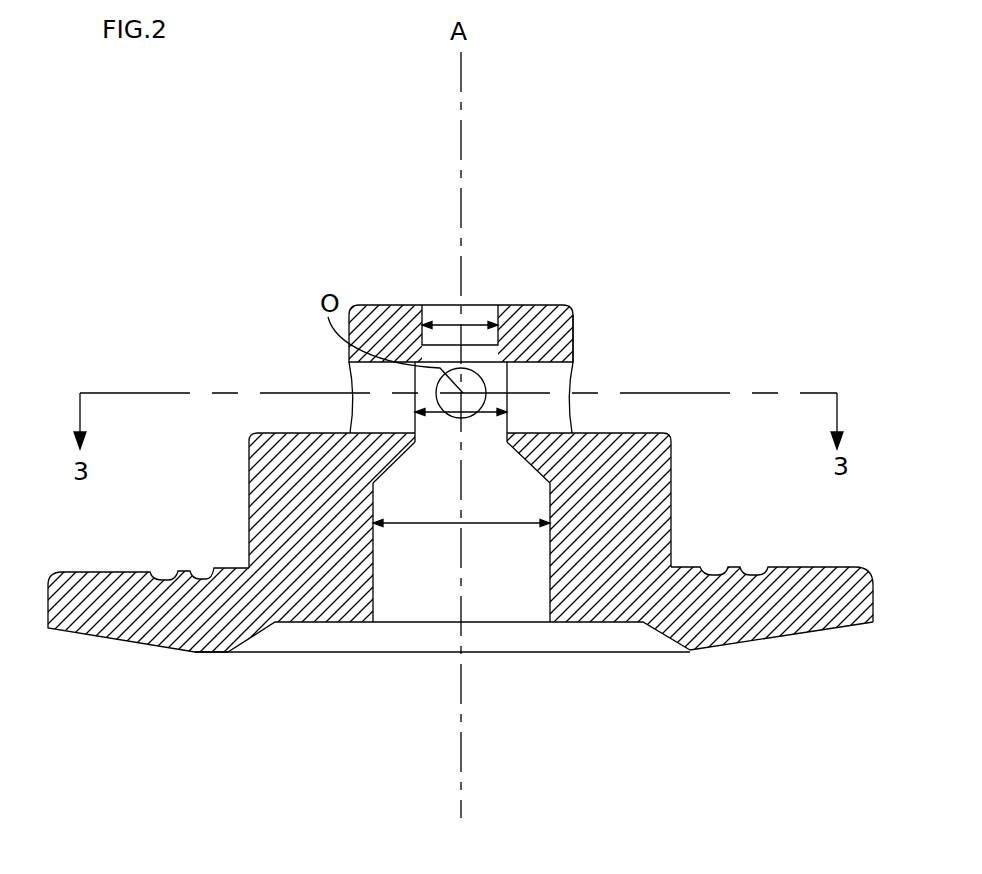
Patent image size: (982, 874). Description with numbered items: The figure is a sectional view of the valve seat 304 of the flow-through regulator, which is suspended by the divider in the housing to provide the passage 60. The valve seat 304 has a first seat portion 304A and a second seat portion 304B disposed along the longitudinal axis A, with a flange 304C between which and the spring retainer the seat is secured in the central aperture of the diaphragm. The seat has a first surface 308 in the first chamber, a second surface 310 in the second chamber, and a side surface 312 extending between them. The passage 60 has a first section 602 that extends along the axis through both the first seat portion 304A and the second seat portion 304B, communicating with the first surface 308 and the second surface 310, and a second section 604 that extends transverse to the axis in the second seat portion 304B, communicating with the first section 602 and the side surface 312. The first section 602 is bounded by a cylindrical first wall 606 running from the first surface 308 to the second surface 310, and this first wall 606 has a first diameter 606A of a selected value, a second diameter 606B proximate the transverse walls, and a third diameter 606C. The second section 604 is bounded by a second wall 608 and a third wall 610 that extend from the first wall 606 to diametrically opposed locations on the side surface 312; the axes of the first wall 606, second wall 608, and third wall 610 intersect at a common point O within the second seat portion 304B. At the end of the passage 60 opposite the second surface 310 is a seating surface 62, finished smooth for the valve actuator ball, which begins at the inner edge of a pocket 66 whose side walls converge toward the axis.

The valve seat 304 is at (110, 286).
The first seat portion 304A is at (312, 565).
The second seat portion 304B is at (267, 478).
The flange 304C is at (108, 610).
The first surface 308 is at (812, 635).
The second surface 310 is at (368, 305).
The side surface 312 is at (575, 338).
The passage 60 is at (437, 570).
The seating surface 62 is at (373, 627).
The pocket 66 is at (422, 630).
The first section 602 is at (487, 590).
The second section 604 is at (378, 380).
The first wall 606 is at (543, 555).
The first diameter 606A is at (552, 504).
The second diameter 606B is at (414, 410).
The third diameter 606C is at (456, 305).
The second wall 608 is at (564, 375).
The third wall 610 is at (500, 330).